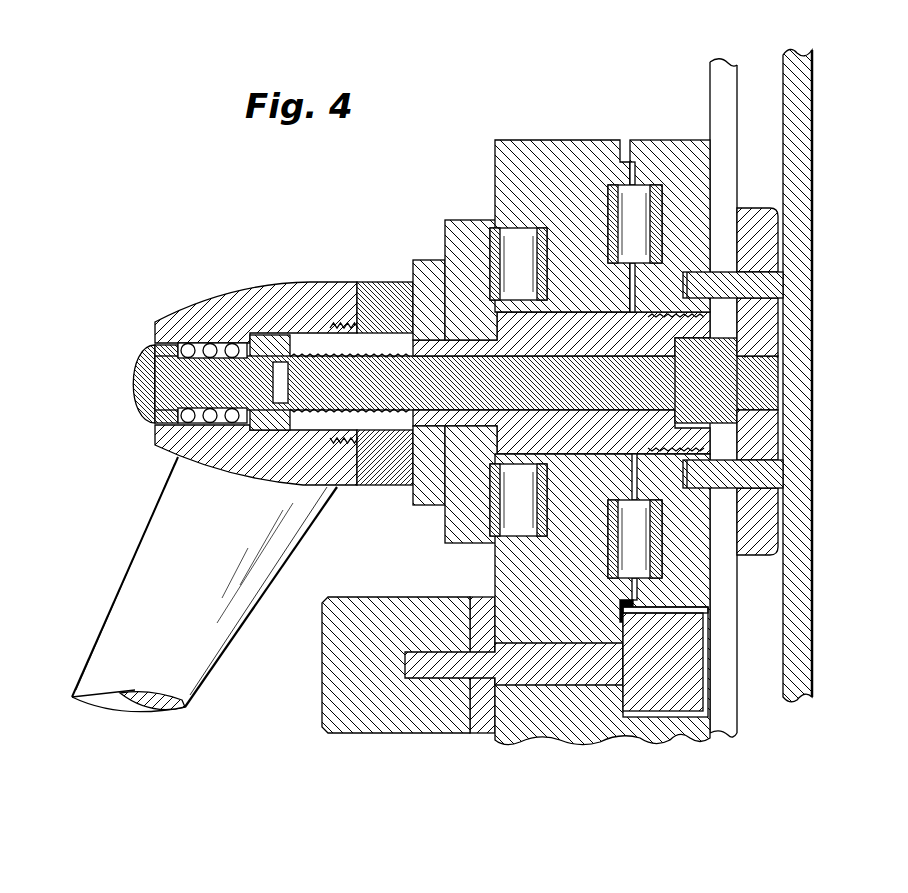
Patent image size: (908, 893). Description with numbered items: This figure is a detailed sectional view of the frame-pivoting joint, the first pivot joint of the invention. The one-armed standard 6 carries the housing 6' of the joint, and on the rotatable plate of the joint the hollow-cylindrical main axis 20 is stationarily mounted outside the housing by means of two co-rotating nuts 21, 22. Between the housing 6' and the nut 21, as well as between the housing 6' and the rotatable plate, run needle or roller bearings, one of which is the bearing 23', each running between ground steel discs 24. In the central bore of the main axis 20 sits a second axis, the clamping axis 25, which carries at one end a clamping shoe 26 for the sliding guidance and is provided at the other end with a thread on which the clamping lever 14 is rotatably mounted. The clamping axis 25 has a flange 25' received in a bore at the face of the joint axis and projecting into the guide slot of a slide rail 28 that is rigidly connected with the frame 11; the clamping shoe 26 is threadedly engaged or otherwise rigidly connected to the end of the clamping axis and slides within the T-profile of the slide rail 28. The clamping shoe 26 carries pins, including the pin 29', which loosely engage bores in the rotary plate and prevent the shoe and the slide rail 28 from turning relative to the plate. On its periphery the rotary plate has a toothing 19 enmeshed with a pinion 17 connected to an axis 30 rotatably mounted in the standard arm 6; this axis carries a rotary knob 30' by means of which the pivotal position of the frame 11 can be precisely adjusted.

The one-armed standard 6 is at (634, 605).
The housing 6' is at (518, 413).
The frame 11 is at (797, 88).
The clamping lever 14 is at (212, 313).
The pinion 17 is at (675, 647).
The toothing 19 is at (708, 612).
The main axis 20 is at (623, 320).
The nut 21 is at (458, 253).
The nut 22 is at (430, 298).
The needle or roller bearing 23' is at (460, 503).
The ground steel disc 24 is at (513, 218).
The clamping axis 25 is at (455, 328).
The flange 25' is at (779, 371).
The clamping shoe 26 is at (757, 232).
The slide rail 28 is at (750, 118).
The pin 29' is at (783, 278).
The axis 30 is at (591, 665).
The rotary knob 30' is at (366, 665).